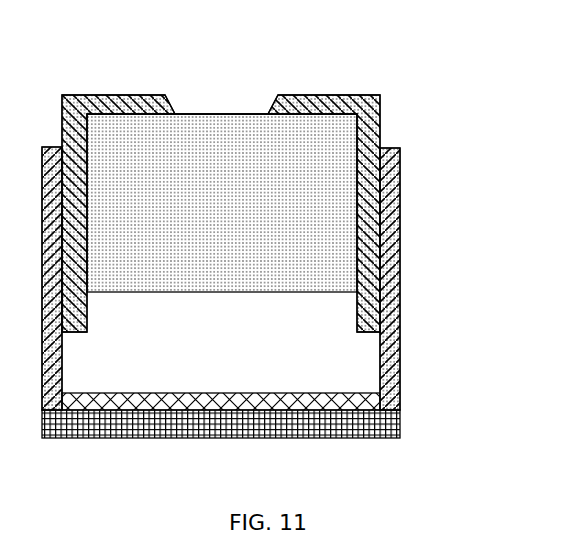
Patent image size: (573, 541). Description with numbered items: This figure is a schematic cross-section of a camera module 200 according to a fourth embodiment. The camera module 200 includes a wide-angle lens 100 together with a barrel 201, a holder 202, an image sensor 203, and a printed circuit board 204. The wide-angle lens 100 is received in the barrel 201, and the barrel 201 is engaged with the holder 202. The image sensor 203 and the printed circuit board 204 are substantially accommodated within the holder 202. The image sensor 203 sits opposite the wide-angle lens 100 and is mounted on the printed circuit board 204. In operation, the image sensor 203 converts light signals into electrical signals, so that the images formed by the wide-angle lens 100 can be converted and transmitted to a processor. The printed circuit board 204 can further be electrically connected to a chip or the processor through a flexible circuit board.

The camera module 200 is at (90, 64).
The wide-angle lens 100 is at (229, 145).
The barrel 201 is at (372, 110).
The holder 202 is at (398, 238).
The image sensor 203 is at (265, 402).
The printed circuit board 204 is at (190, 426).